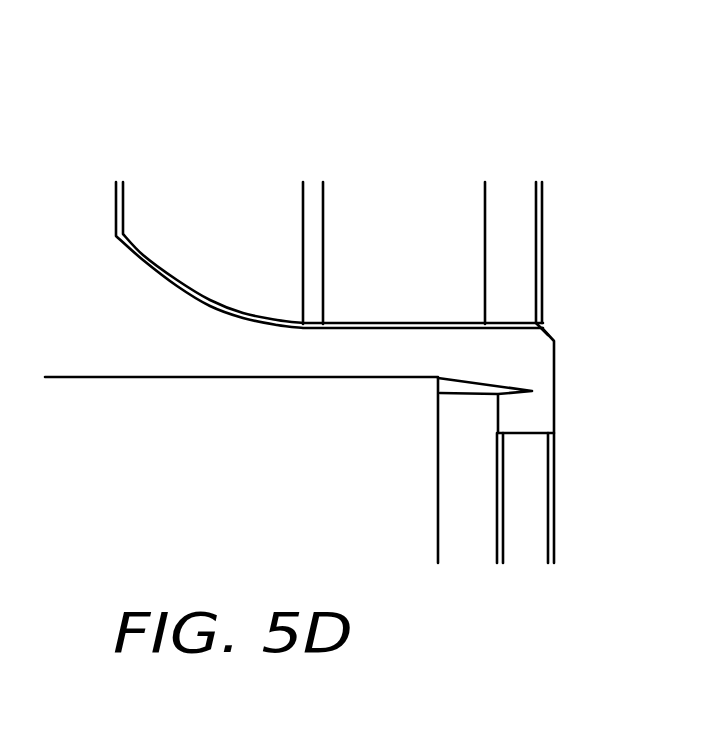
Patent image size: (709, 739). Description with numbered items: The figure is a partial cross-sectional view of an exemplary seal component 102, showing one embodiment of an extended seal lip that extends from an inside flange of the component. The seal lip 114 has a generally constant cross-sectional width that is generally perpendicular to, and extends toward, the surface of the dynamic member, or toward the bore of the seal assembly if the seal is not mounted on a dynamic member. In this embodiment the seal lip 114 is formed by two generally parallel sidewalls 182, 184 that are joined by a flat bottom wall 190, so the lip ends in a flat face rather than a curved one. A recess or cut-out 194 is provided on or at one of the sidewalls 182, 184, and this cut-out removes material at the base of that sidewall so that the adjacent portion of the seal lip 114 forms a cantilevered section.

The seal component 102 is at (149, 306).
The seal lip 114 is at (542, 390).
The sidewall 184 is at (557, 406).
The flat bottom wall 190 is at (527, 434).
The recess or cut-out 194 is at (530, 391).
The sidewall 182 is at (495, 415).